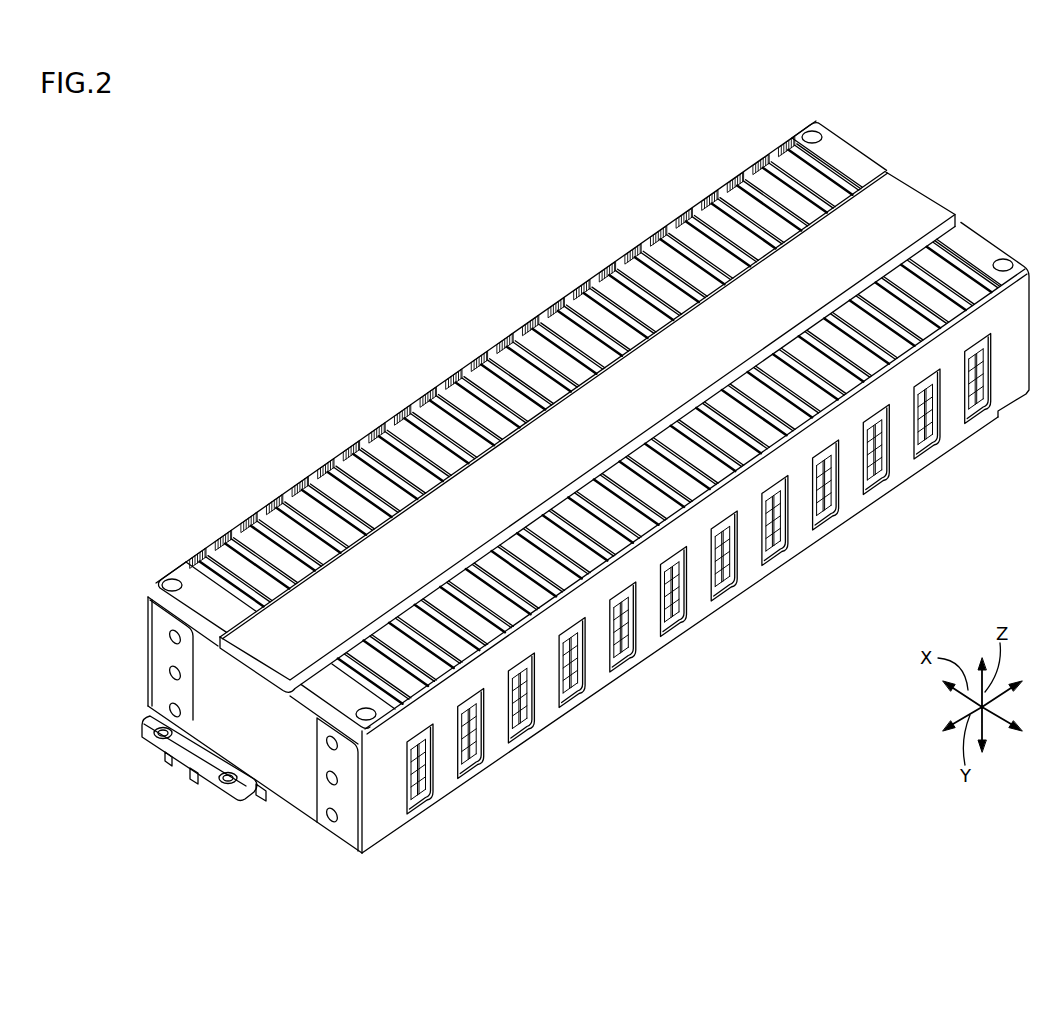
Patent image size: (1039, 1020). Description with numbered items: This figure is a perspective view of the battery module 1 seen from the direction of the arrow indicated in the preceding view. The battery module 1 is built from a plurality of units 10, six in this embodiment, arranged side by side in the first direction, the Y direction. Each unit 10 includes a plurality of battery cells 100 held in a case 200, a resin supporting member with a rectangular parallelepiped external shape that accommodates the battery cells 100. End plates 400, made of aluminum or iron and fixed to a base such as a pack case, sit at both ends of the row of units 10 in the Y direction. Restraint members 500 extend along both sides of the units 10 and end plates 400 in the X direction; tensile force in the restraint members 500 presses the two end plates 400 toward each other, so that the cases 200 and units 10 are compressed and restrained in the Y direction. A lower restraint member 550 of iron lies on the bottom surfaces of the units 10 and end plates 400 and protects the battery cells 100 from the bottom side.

The battery module 1 is at (274, 348).
The unit 10 is at (223, 528).
The battery cell 100 is at (483, 376).
The case 200 is at (395, 414).
The end plate 400 is at (195, 600).
The restraint member 500 is at (651, 642).
The lower restraint member 550 is at (722, 314).